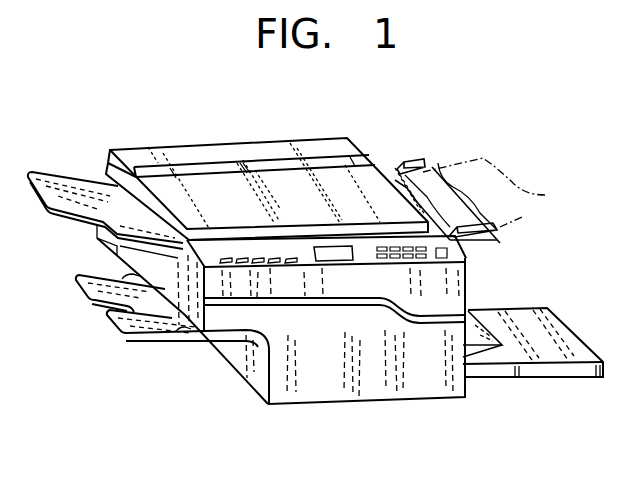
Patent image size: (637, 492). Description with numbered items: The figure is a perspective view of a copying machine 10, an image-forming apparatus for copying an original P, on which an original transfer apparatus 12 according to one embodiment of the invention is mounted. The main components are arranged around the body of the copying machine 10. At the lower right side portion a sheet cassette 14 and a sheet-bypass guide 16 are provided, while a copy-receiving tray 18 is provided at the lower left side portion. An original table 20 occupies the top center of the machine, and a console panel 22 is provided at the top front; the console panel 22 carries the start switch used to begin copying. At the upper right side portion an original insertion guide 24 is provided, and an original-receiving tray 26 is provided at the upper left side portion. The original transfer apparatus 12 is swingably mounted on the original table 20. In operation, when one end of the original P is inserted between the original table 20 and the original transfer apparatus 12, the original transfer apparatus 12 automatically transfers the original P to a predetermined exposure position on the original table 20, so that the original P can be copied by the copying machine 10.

The copying machine 10 is at (407, 378).
The original transfer apparatus 12 is at (333, 175).
The sheet cassette 14 is at (543, 357).
The sheet-bypass guide 16 is at (490, 328).
The copy-receiving tray 18 is at (157, 320).
The original table 20 is at (297, 240).
The console panel 22 is at (363, 252).
The original insertion guide 24 is at (450, 197).
The original-receiving tray 26 is at (72, 190).
The original P is at (538, 194).